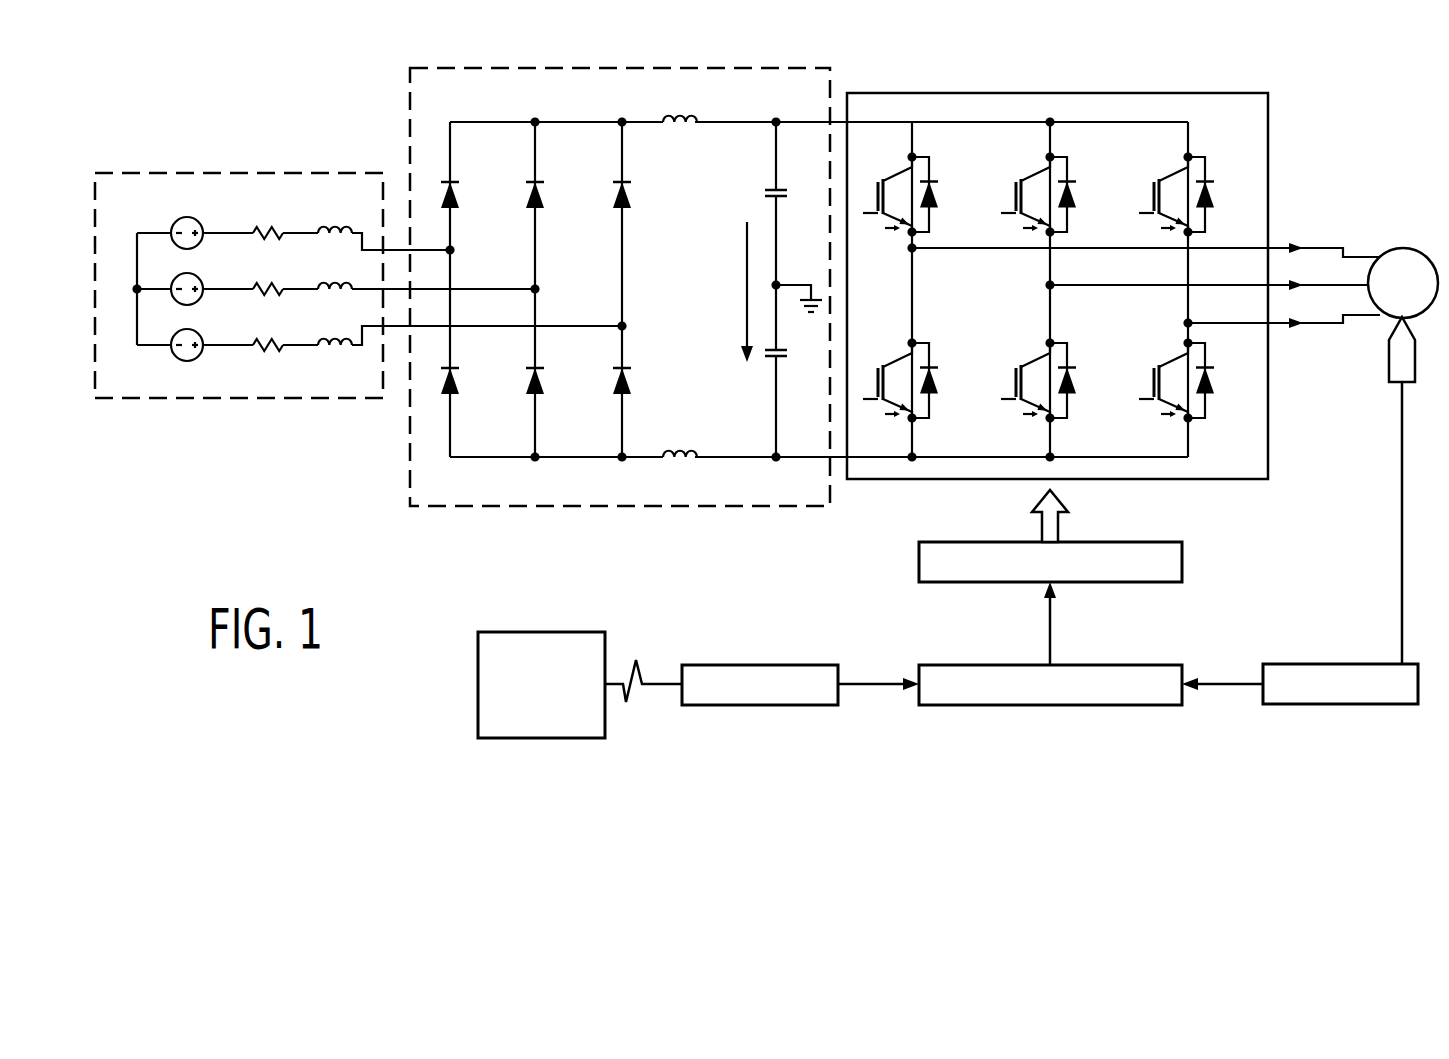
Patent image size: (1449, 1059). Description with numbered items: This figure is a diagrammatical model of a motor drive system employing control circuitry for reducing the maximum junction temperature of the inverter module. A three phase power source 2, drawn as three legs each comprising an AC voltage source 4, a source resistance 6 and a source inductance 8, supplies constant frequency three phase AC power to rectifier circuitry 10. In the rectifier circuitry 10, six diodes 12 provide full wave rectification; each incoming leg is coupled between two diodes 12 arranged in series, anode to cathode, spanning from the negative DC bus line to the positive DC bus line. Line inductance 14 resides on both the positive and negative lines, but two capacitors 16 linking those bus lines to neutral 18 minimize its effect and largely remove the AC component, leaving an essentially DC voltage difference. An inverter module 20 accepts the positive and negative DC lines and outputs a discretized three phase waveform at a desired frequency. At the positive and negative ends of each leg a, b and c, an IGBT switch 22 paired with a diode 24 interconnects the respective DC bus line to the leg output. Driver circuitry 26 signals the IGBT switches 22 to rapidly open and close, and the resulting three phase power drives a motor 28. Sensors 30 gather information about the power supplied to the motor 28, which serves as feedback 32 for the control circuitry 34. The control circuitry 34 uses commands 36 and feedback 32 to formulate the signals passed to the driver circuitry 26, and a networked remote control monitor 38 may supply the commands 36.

The three phase power source 2 is at (100, 400).
The AC voltage source 4 is at (187, 362).
The source resistance 6 is at (271, 352).
The source inductance 8 is at (339, 352).
The rectifier circuitry 10 is at (423, 68).
The diodes 12 is at (443, 388).
The line inductance 14 is at (695, 118).
The capacitors 16 is at (765, 190).
The neutral 18 is at (808, 314).
The inverter module 20 is at (897, 92).
The IGBT switch 22 is at (1110, 130).
The diode 24 is at (1218, 160).
The driver circuitry 26 is at (1184, 566).
The motor 28 is at (1395, 207).
The sensors 30 is at (1415, 372).
The feedback 32 is at (1342, 705).
The control circuitry 34 is at (918, 722).
The commands 36 is at (760, 665).
The remote control monitor 38 is at (532, 740).